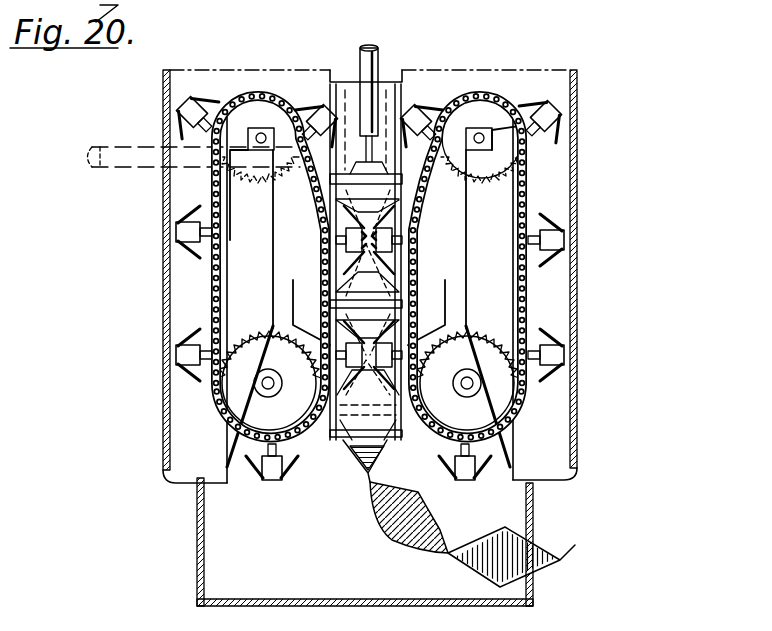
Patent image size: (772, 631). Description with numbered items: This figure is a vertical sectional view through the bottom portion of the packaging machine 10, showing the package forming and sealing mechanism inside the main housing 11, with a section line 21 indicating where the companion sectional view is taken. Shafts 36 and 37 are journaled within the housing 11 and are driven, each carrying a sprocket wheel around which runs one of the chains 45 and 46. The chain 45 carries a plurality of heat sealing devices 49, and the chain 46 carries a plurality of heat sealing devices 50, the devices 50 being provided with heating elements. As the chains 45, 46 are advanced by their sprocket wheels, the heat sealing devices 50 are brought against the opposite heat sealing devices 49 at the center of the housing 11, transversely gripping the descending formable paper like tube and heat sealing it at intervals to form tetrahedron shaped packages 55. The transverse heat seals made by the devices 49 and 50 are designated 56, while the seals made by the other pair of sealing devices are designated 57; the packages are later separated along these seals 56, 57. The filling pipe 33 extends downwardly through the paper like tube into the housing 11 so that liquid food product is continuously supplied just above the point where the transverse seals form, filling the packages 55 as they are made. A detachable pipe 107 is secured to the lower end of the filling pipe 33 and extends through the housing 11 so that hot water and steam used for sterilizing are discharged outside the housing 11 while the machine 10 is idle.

The packaging machine 10 is at (585, 163).
The main housing 11 is at (197, 522).
The section line 21 is at (97, 95).
The filling pipe 33 is at (380, 50).
The shaft 36 is at (261, 132).
The shaft 37 is at (480, 132).
The chain 45 is at (335, 236).
The chain 46 is at (403, 240).
The heat sealing device 49 is at (185, 108).
The heat sealing device 50 is at (412, 115).
The tetrahedron shaped package 55 is at (362, 460).
The transverse heat seal 56 is at (372, 484).
The transverse heat seal 57 is at (392, 540).
The pipe 107 is at (88, 191).